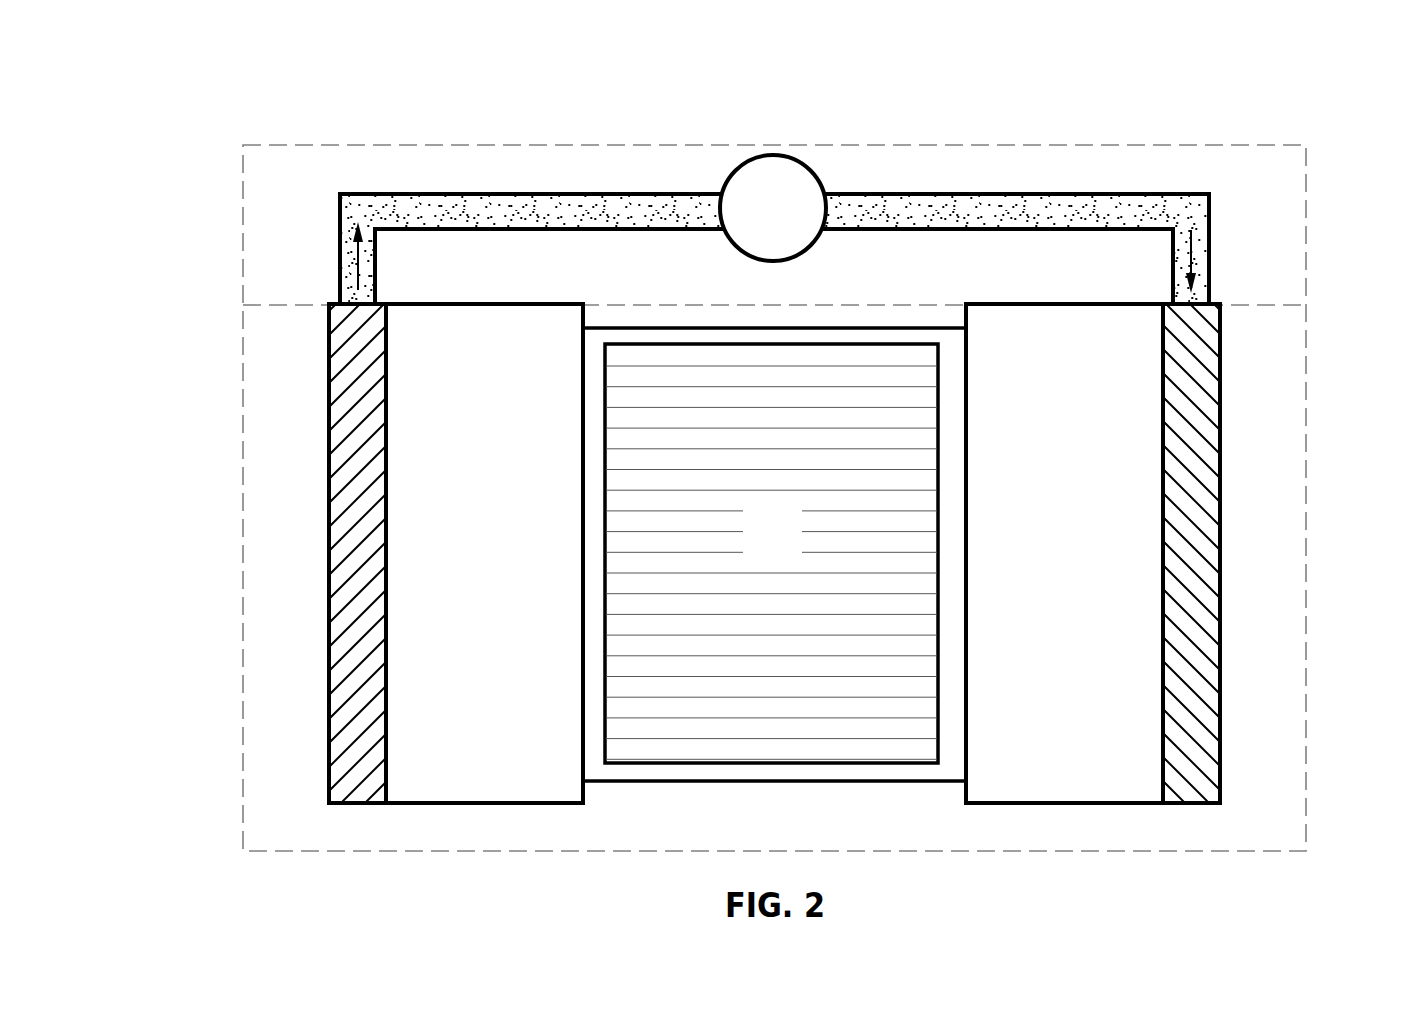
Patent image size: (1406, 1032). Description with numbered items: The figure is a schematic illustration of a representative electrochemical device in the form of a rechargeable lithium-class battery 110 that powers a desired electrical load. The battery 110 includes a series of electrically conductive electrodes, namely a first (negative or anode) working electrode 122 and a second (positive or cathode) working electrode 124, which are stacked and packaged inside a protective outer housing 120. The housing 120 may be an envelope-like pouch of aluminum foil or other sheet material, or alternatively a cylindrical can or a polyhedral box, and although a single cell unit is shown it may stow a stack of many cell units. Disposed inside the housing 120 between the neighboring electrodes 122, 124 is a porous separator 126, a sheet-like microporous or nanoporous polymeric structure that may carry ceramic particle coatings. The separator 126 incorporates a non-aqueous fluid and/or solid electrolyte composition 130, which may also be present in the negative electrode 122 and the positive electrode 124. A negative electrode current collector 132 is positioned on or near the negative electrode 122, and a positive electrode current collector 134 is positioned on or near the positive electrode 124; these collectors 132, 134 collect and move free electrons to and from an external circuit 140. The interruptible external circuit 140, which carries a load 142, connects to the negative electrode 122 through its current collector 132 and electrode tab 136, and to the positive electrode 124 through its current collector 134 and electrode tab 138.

The rechargeable lithium-class battery 110 is at (134, 96).
The protective outer housing 120 is at (230, 362).
The first working electrode 122 is at (504, 537).
The second working electrode 124 is at (1092, 537).
The porous separator 126 is at (630, 783).
The electrolyte composition 130 is at (800, 548).
The negative electrode current collector 132 is at (329, 526).
The positive electrode current collector 134 is at (1221, 526).
The electrode tab 136 is at (338, 303).
The electrode tab 138 is at (1211, 303).
The external circuit 140 is at (388, 130).
The load 142 is at (800, 224).